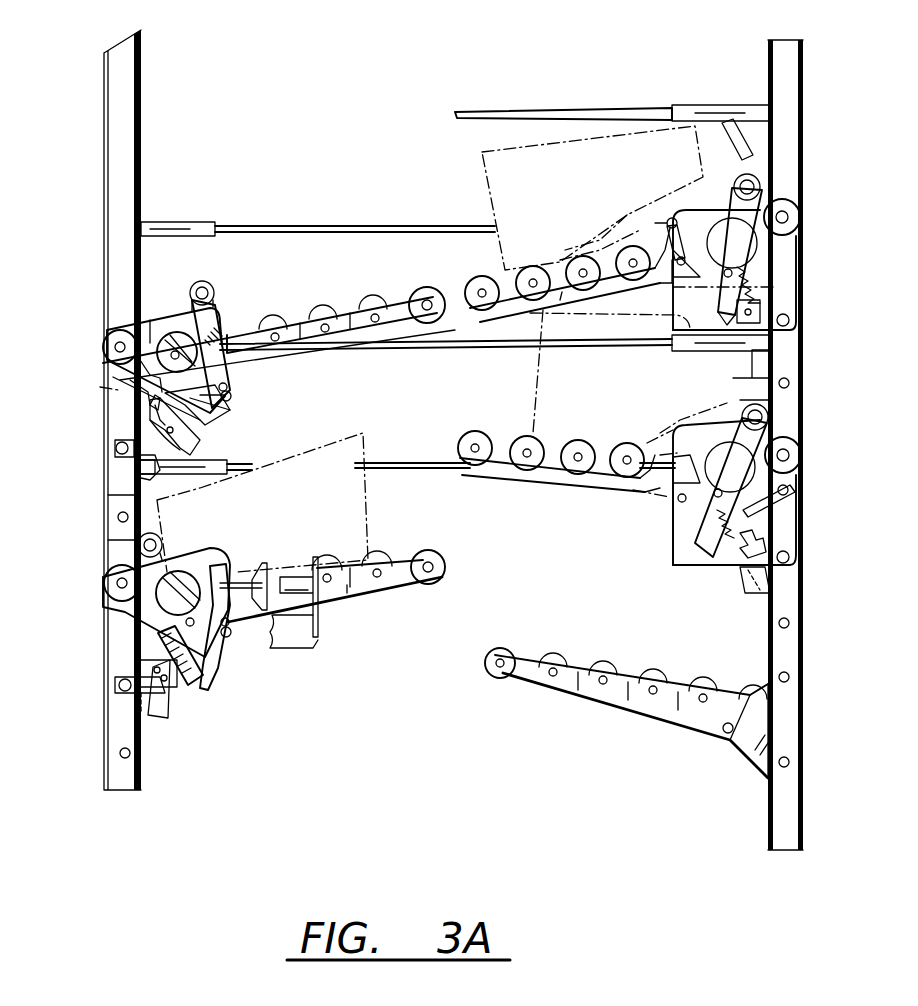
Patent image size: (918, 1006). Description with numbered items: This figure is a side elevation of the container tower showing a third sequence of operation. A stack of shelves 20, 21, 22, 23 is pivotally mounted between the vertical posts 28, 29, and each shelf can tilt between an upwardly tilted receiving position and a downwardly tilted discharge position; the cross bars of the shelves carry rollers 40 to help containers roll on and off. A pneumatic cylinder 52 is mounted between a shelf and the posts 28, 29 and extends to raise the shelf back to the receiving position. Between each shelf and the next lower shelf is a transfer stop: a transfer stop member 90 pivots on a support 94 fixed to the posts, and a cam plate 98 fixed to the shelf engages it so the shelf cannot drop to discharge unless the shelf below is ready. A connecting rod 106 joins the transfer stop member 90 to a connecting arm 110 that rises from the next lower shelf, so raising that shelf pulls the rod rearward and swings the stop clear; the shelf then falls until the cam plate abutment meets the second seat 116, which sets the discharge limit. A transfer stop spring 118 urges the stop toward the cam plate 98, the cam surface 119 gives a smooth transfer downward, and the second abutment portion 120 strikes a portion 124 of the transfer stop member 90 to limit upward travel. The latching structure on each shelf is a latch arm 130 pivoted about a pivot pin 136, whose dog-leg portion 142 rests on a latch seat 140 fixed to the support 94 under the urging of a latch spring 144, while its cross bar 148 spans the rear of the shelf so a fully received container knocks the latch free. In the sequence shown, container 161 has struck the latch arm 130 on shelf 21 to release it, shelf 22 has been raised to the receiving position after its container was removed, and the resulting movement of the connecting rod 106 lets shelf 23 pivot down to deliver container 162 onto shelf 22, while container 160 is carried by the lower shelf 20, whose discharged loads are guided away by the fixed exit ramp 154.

The shelf 20 is at (362, 592).
The shelf 21 is at (557, 478).
The shelf 22 is at (270, 360).
The shelf 23 is at (557, 301).
The post 28 is at (128, 99).
The post 29 is at (777, 57).
The rollers 40 is at (440, 553).
The pneumatic cylinder 52 is at (165, 712).
The transfer stop member 90 is at (231, 397).
The support 94 is at (135, 468).
The cam plate 98 is at (142, 340).
The connecting rod 106 is at (512, 110).
The connecting arm 110 is at (131, 503).
The second seat 116 is at (622, 243).
The transfer stop spring 118 is at (222, 308).
The cam surface 119 is at (132, 404).
The second abutment portion 120 is at (253, 471).
The portion of the transfer stop member 124 is at (222, 405).
The latch arm 130 is at (213, 283).
The pivot pin 136 is at (140, 366).
The latch seat 140 is at (130, 452).
The dog-leg portion 142 is at (207, 480).
The latch spring 144 is at (130, 390).
The cross bar 148 is at (213, 257).
The exit ramp 154 is at (612, 698).
The container 160 is at (312, 541).
The container 161 is at (625, 393).
The container 162 is at (590, 198).